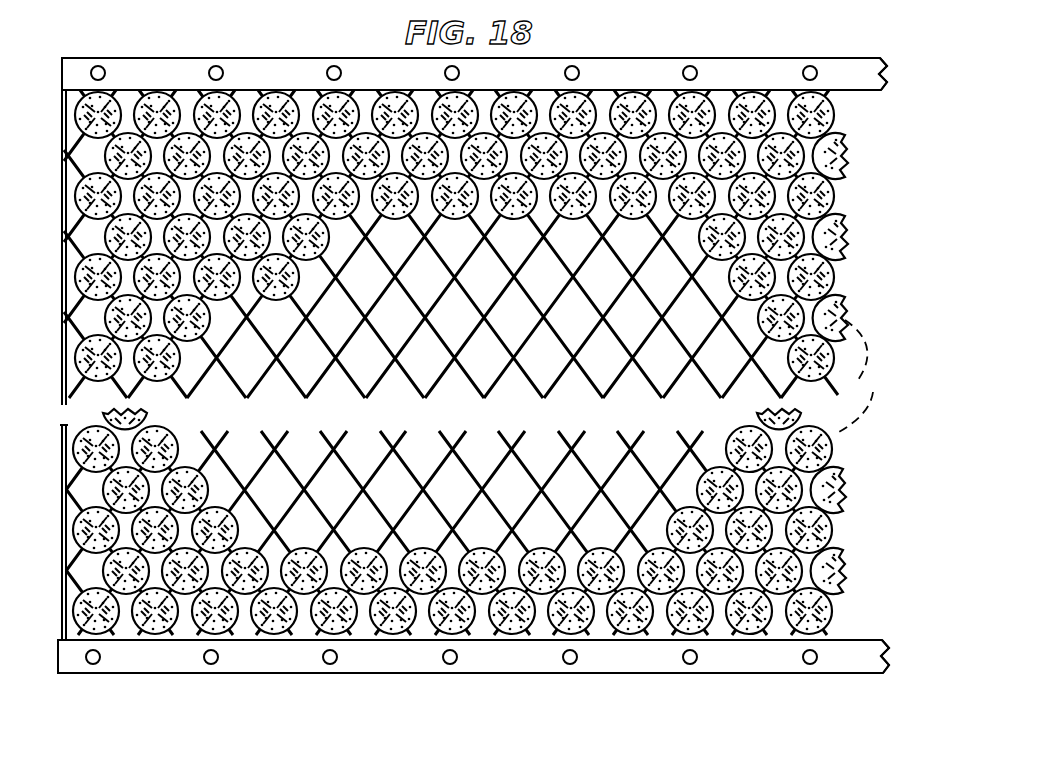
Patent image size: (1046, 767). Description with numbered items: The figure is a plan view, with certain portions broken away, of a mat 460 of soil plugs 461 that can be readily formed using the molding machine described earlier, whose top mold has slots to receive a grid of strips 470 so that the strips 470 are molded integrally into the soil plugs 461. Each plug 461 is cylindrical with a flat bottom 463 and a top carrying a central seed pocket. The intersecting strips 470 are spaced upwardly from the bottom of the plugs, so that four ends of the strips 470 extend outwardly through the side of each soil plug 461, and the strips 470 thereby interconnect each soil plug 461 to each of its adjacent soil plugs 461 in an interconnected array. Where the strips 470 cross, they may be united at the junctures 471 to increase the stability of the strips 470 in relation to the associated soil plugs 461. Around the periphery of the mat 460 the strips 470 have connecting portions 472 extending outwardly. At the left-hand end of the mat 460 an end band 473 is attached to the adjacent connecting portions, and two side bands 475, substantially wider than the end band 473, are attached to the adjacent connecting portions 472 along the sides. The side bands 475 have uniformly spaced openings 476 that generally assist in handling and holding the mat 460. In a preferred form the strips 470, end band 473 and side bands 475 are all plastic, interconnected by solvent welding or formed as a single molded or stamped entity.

The mat 460 is at (56, 33).
The soil plugs 461 is at (85, 300).
The flat bottom 463 is at (840, 222).
The strips 470 is at (415, 463).
The junctures 471 is at (868, 376).
The connecting portions 472 is at (840, 88).
The end band 473 is at (60, 453).
The side bands 475 is at (277, 68).
The openings 476 is at (213, 67).